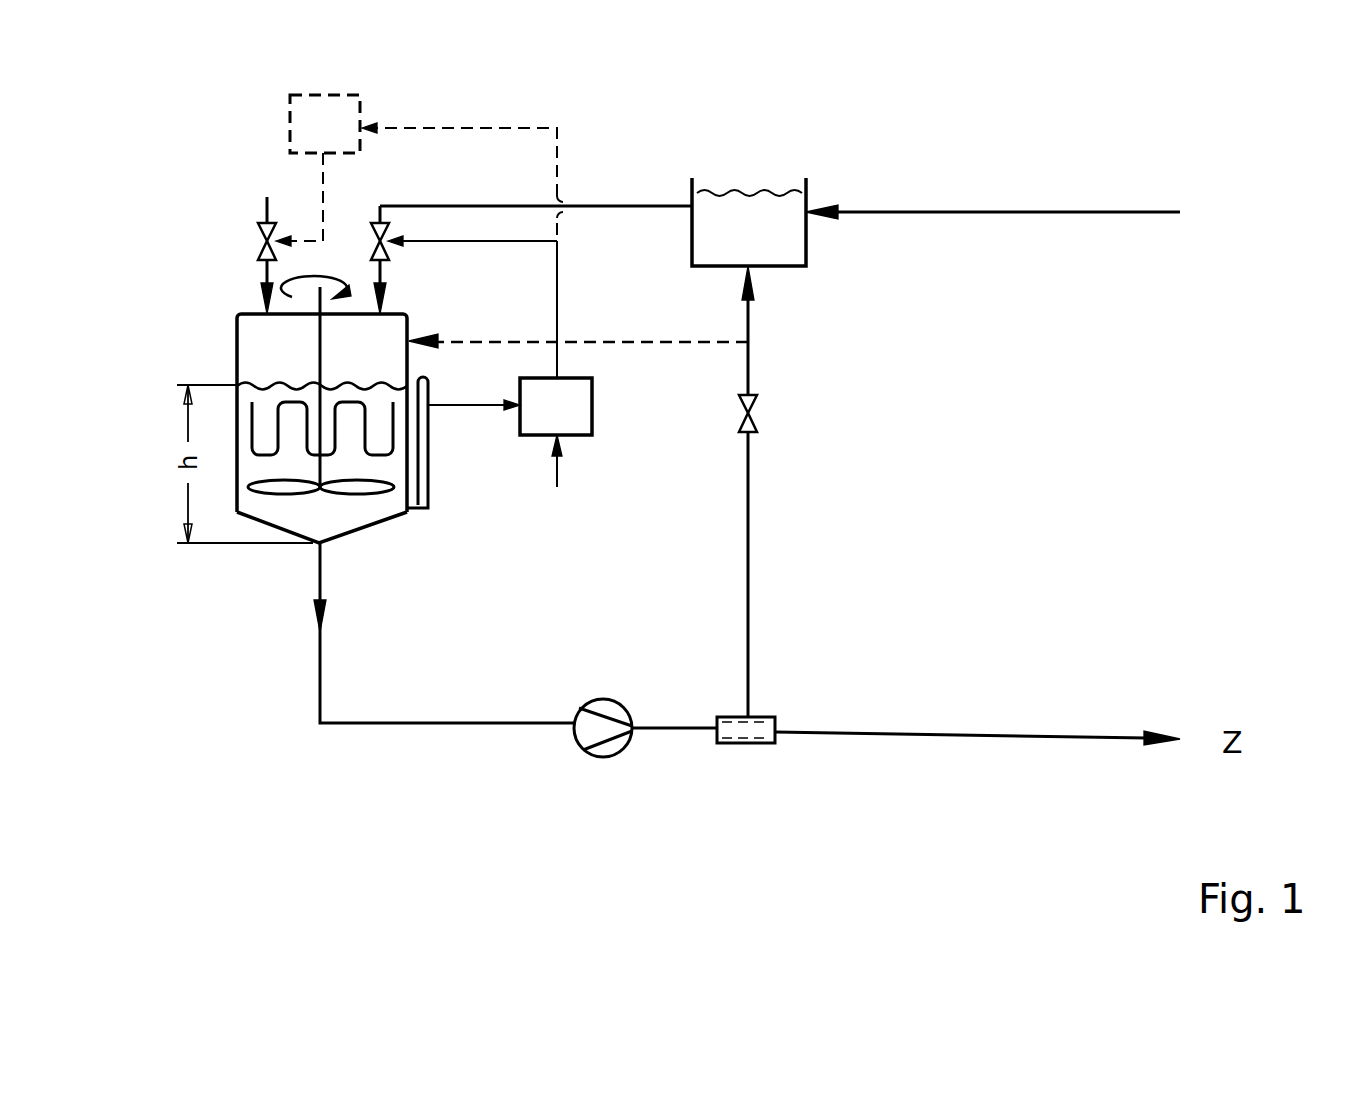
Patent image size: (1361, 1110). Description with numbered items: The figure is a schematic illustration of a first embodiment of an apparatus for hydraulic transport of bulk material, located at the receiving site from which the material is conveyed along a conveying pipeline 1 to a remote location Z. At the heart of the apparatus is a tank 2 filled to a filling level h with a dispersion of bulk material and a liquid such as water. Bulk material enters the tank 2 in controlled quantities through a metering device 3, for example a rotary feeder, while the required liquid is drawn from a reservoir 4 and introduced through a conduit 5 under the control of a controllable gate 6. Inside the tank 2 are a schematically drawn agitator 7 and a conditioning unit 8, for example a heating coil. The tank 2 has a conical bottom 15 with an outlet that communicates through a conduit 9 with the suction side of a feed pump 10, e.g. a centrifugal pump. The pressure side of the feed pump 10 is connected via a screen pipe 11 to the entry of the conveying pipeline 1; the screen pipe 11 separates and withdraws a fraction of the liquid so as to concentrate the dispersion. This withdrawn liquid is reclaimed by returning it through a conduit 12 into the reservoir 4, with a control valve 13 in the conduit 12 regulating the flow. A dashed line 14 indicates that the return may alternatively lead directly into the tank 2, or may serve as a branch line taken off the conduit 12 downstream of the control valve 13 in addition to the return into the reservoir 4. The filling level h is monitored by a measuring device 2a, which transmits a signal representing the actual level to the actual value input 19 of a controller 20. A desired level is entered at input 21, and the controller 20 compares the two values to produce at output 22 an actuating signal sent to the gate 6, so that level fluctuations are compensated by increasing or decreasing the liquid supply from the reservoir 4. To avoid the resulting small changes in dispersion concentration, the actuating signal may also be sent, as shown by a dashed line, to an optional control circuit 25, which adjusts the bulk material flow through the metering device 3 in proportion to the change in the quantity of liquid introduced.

The conveying pipeline 1 is at (968, 740).
The tank 2 is at (234, 330).
The measuring device 2a is at (432, 382).
The metering device 3 is at (255, 240).
The reservoir 4 is at (808, 260).
The conduit 5 is at (628, 205).
The controllable gate 6 is at (390, 256).
The agitator 7 is at (240, 488).
The conditioning unit 8 is at (242, 422).
The conduit 9 is at (312, 688).
The feed pump 10 is at (607, 760).
The screen pipe 11 is at (752, 750).
The conduit 12 is at (750, 582).
The control valve 13 is at (758, 413).
The dashed line 14 is at (662, 344).
The conical bottom 15 is at (291, 538).
The actual value input 19 is at (470, 410).
The controller 20 is at (595, 410).
The input 21 is at (560, 483).
The output 22 is at (560, 360).
The control circuit 25 is at (319, 85).